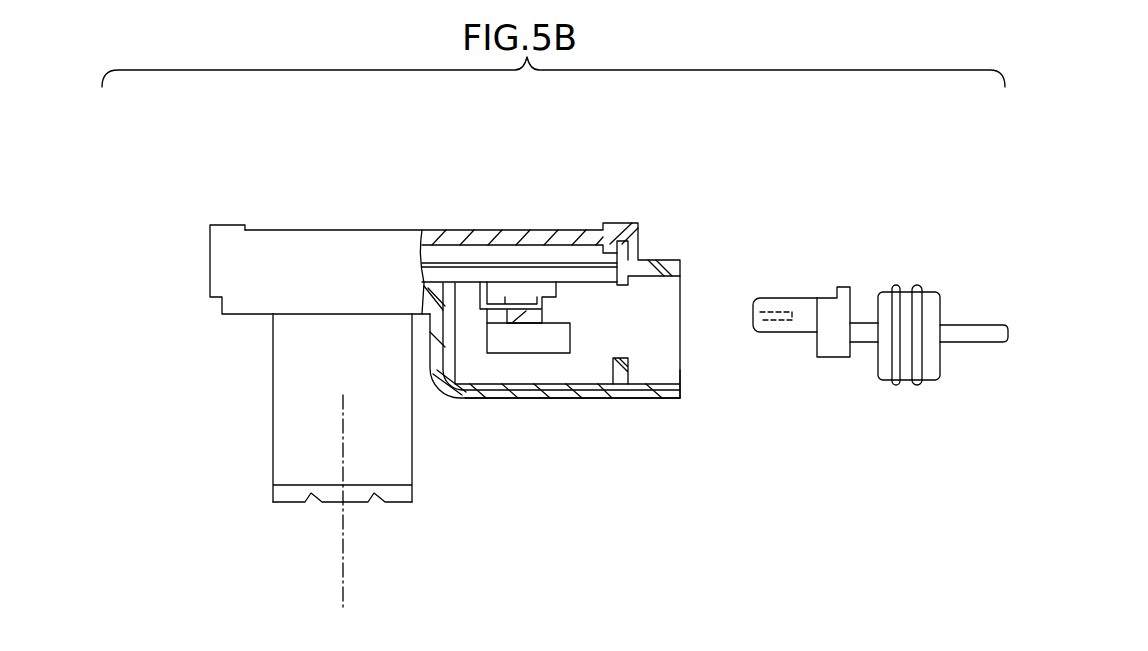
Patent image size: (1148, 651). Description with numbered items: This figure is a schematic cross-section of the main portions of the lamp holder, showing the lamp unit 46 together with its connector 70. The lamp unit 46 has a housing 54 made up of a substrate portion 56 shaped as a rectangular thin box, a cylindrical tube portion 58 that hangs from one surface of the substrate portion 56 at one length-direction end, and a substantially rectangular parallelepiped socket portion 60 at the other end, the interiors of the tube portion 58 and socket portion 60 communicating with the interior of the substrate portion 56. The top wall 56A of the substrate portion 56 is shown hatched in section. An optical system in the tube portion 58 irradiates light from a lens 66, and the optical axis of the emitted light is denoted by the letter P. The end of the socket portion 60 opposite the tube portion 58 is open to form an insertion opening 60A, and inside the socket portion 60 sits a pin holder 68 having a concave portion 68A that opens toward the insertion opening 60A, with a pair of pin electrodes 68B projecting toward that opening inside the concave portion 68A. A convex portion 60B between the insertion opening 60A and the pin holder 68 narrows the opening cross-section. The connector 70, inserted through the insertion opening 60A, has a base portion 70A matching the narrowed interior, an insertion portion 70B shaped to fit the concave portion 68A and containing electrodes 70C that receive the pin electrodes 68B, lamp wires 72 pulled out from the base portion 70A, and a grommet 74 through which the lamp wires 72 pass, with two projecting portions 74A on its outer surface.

The lamp unit 46 is at (715, 176).
The housing 54 is at (145, 328).
The substrate portion 56 is at (232, 313).
The top wall portion 56A is at (468, 229).
The tube portion 58 is at (273, 383).
The socket portion 60 is at (445, 393).
The insertion opening 60A is at (683, 380).
The convex portion 60B is at (617, 352).
The lens 66 is at (400, 495).
The pin holder 68 is at (570, 336).
The concave portion 68A is at (555, 325).
The pin electrodes 68B is at (515, 322).
The connector 70 is at (897, 262).
The base portion 70A is at (838, 358).
The insertion portion 70B is at (782, 296).
The electrodes 70C is at (777, 334).
The lamp wires 72 is at (985, 343).
The grommet 74 is at (957, 296).
The projecting portions 74A is at (916, 286).
The optical axis P is at (343, 573).